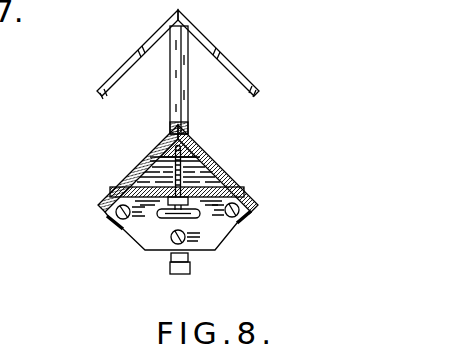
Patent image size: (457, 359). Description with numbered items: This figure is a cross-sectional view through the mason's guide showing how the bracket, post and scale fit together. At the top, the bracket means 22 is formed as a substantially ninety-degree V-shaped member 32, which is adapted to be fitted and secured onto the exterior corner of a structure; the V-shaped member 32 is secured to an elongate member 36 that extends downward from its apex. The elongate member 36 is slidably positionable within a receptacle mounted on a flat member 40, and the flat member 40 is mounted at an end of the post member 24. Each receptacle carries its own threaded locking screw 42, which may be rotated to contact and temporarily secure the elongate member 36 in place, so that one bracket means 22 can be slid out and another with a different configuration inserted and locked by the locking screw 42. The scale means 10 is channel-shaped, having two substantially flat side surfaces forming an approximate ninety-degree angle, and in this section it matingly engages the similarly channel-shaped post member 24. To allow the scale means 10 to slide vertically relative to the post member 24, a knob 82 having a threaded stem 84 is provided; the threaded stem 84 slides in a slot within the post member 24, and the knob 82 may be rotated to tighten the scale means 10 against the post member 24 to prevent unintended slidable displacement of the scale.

The scale means 10 is at (191, 141).
The bracket means 22 is at (125, 67).
The V-shaped member 32 is at (247, 72).
The elongate member 36 is at (174, 105).
The threaded stem 84 is at (214, 164).
The post member 24 is at (228, 189).
The knob 82 is at (198, 219).
The flat member 40 is at (231, 237).
The threaded locking screw 42 is at (112, 212).